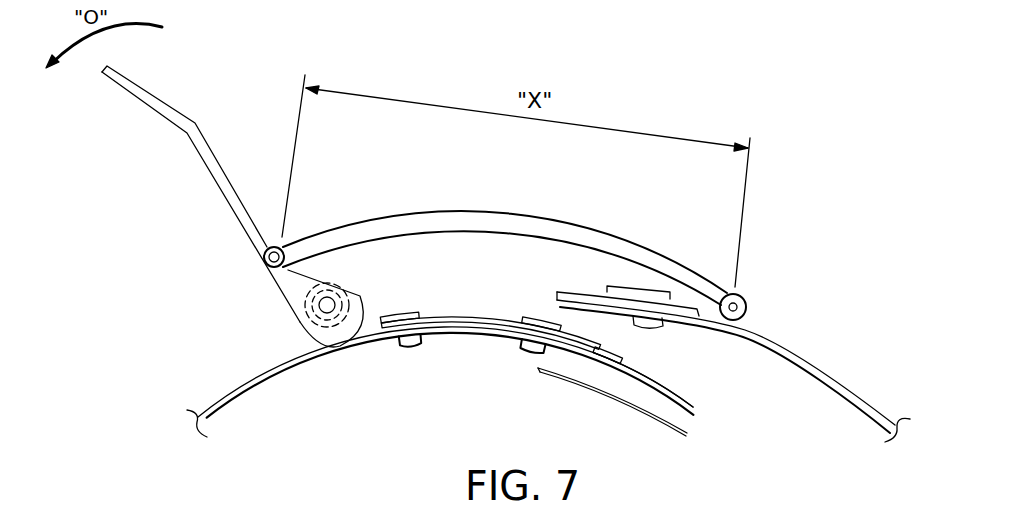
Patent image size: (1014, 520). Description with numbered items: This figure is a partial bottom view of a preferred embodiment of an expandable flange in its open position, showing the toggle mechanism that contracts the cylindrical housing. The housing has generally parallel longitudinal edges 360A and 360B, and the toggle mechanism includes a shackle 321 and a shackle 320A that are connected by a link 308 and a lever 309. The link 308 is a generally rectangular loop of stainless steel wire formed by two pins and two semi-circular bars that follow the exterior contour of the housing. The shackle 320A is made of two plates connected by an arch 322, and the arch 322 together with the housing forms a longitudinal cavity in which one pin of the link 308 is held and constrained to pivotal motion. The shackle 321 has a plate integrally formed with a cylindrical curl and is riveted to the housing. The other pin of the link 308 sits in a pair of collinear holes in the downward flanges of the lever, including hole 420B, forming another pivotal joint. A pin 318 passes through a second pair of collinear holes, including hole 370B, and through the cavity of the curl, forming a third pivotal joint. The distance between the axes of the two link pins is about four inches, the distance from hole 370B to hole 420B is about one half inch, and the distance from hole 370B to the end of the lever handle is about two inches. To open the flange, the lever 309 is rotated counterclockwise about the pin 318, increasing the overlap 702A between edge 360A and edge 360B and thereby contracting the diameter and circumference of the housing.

The link 308 is at (516, 202).
The lever 309 is at (206, 193).
The pin 318 is at (323, 303).
The shackle 320A is at (810, 310).
The shackle 321 is at (438, 303).
The arch 322 is at (742, 292).
The longitudinal edge 360A is at (697, 413).
The longitudinal edge 360B is at (557, 295).
The hole 370B is at (317, 285).
The hole 420B is at (262, 240).
The overlap 702A is at (600, 396).